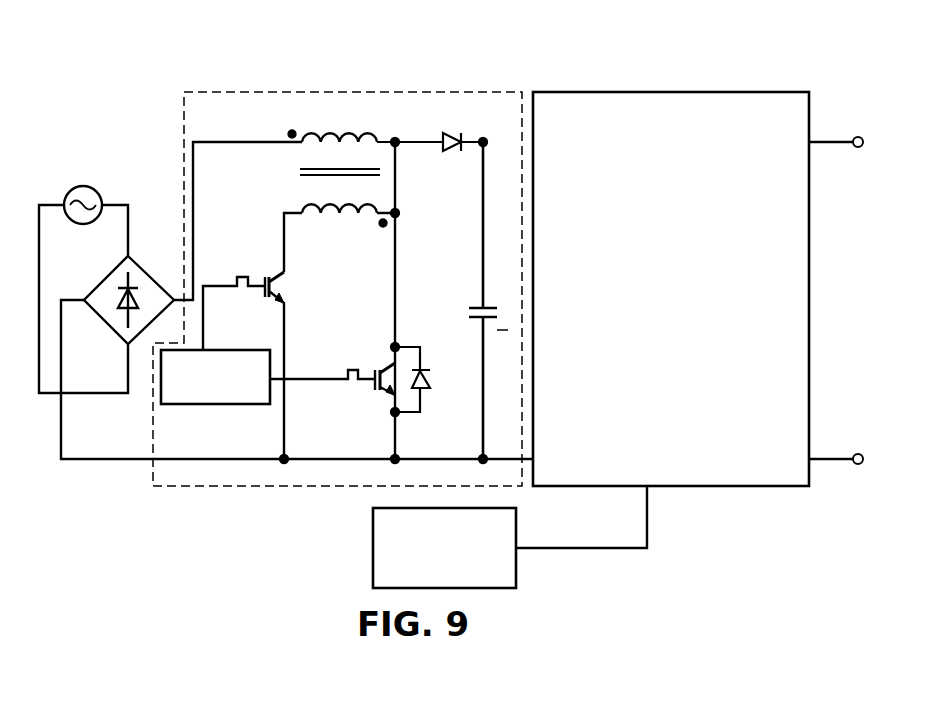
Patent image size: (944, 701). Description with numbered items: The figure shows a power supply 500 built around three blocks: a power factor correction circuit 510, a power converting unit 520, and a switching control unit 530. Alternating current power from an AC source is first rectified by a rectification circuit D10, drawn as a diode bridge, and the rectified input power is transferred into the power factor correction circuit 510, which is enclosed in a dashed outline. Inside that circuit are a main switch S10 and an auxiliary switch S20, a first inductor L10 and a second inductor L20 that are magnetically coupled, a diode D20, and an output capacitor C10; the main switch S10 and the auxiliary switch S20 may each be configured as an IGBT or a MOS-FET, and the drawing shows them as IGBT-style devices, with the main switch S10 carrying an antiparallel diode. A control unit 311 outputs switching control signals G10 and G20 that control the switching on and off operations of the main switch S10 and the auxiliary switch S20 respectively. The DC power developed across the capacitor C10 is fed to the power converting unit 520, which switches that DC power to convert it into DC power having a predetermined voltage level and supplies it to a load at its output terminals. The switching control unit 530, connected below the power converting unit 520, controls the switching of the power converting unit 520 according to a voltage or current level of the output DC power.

The power supply 500 is at (102, 74).
The power factor correction circuit 510 is at (351, 92).
The power converting unit 520 is at (686, 92).
The switching control unit 530 is at (373, 550).
The control unit 311 is at (203, 404).
The rectification circuit D10 is at (116, 300).
The diode D20 is at (430, 127).
The first inductor L10 is at (334, 139).
The second inductor L20 is at (339, 238).
The capacitor C10 is at (469, 300).
The main switch S10 is at (388, 385).
The auxiliary switch S20 is at (296, 365).
The switching control signal G10 is at (322, 362).
The switching control signal G20 is at (234, 299).